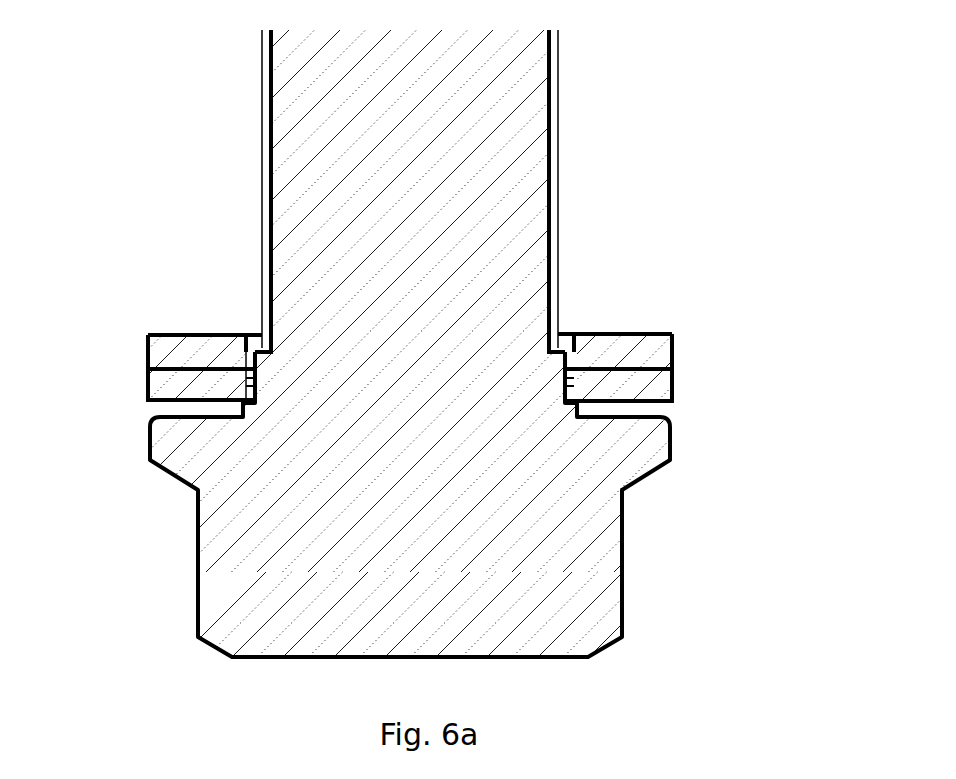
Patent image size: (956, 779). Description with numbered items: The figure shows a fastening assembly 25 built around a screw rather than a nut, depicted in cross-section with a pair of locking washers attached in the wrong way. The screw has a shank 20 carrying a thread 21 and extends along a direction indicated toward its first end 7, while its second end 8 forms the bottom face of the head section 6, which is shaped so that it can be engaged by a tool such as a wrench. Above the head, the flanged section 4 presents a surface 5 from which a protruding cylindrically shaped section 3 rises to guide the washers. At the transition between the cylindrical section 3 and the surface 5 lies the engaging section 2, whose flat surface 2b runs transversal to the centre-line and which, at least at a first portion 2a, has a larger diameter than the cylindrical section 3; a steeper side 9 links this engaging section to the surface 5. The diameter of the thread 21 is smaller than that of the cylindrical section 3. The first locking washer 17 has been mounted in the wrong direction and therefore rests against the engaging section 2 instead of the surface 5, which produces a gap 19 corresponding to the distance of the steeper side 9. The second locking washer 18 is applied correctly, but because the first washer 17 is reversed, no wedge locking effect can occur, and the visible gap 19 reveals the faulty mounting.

The engaging section 2 is at (245, 380).
The first portion 2a is at (577, 400).
The flat surface 2b is at (250, 400).
The cylindrically shaped section 3 is at (573, 350).
The flanged section 4 is at (660, 437).
The surface 5 is at (577, 413).
The hexagonal head section 6 is at (625, 550).
The first end 7 is at (217, 37).
The second end 8 is at (558, 672).
The steeper side 9 is at (578, 407).
The first locking washer 17 is at (673, 385).
The second locking washer 18 is at (668, 338).
The gap 19 is at (155, 413).
The shank 20 is at (400, 175).
The thread 21 is at (556, 185).
The fastening assembly 25 is at (660, 119).